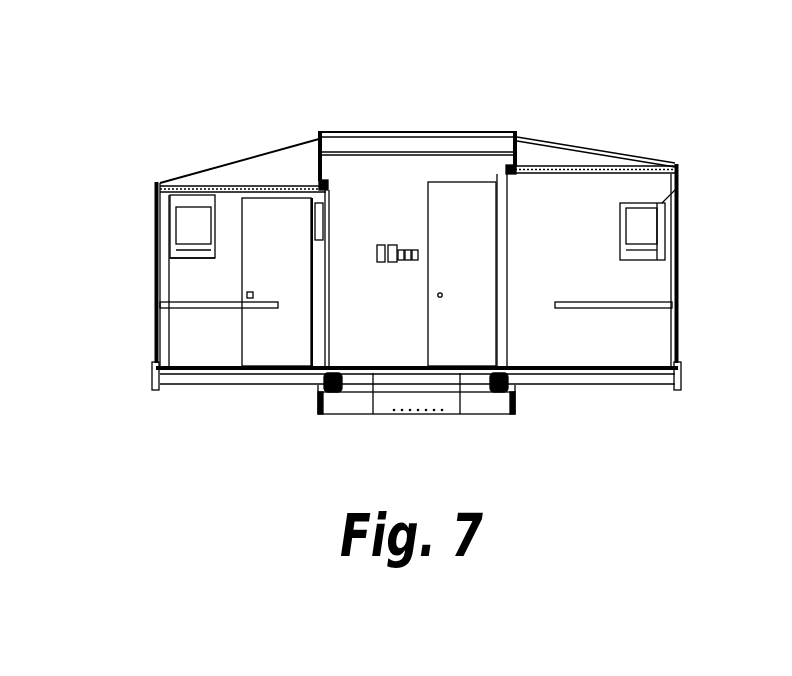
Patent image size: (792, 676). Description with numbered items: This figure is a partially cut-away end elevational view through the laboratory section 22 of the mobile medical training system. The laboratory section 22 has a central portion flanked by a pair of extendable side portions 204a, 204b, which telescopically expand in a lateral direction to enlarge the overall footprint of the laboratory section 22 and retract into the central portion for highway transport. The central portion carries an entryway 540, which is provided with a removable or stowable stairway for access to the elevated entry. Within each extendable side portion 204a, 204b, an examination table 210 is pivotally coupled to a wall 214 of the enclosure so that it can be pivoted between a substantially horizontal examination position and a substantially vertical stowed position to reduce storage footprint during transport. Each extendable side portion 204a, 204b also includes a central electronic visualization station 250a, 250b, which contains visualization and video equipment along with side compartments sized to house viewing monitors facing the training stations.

The laboratory section 22 is at (155, 137).
The extendable side portion 204a is at (222, 162).
The extendable side portion 204b is at (591, 148).
The entryway 540 is at (268, 218).
The central electronic visualization station 250a is at (156, 238).
The central electronic visualization station 250b is at (678, 252).
The wall 214 is at (153, 328).
The examination table 210 is at (271, 300).